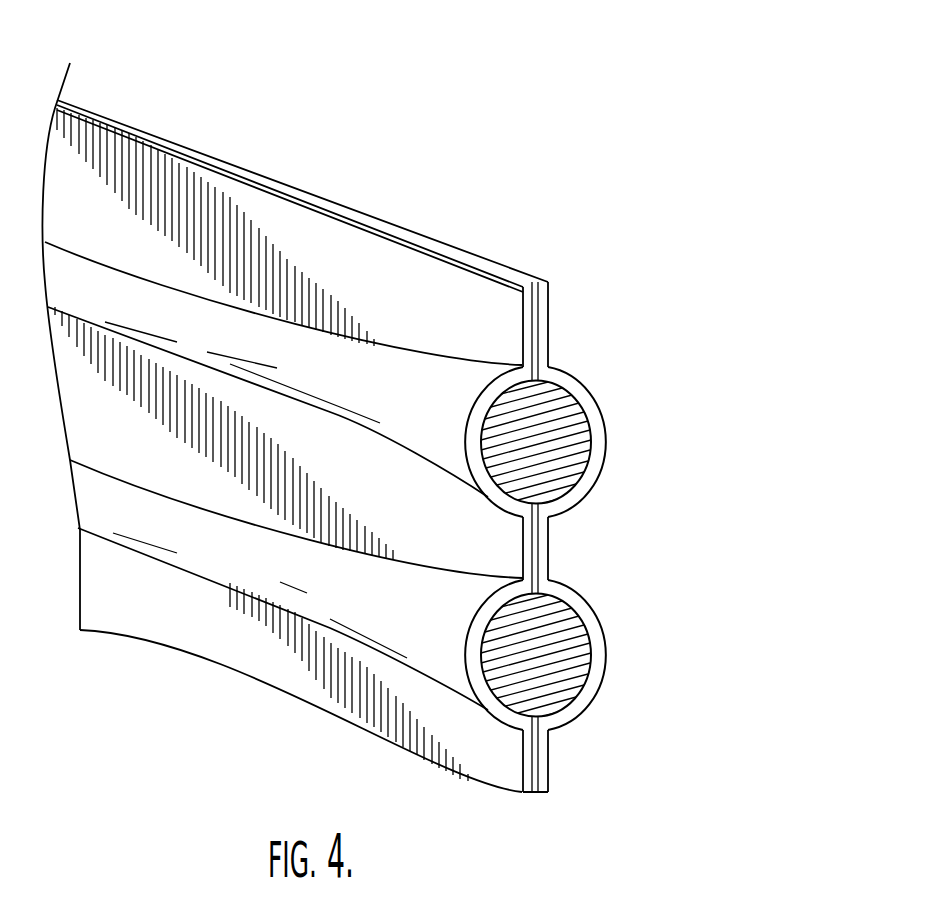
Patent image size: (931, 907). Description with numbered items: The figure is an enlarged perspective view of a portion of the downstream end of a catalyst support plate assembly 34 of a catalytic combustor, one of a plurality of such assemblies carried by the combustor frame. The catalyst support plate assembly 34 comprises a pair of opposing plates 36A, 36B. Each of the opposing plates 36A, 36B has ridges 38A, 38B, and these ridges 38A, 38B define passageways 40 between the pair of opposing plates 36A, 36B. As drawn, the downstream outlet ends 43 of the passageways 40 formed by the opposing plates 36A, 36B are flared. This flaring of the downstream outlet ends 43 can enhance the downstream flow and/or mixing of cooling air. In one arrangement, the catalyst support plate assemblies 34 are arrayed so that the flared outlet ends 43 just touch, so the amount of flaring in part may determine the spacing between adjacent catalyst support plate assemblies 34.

The catalyst support plate assembly 34 is at (642, 54).
The opposing plate 36A is at (345, 210).
The opposing plate 36B is at (550, 300).
The ridge 38A is at (528, 337).
The ridge 38B is at (542, 332).
The passageway 40 is at (557, 450).
The downstream outlet end 43 is at (608, 405).